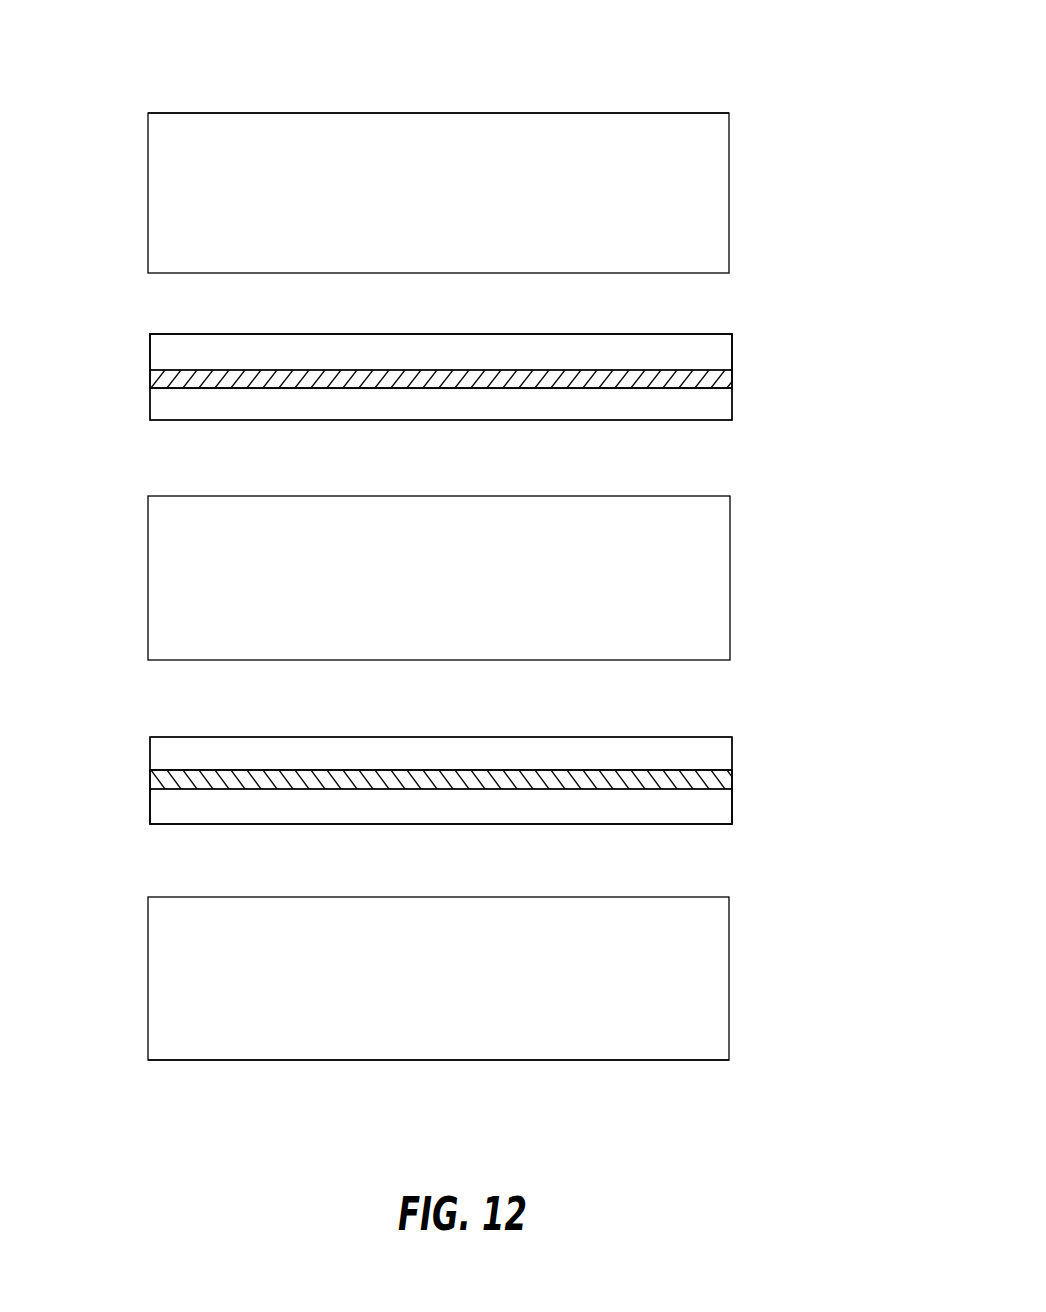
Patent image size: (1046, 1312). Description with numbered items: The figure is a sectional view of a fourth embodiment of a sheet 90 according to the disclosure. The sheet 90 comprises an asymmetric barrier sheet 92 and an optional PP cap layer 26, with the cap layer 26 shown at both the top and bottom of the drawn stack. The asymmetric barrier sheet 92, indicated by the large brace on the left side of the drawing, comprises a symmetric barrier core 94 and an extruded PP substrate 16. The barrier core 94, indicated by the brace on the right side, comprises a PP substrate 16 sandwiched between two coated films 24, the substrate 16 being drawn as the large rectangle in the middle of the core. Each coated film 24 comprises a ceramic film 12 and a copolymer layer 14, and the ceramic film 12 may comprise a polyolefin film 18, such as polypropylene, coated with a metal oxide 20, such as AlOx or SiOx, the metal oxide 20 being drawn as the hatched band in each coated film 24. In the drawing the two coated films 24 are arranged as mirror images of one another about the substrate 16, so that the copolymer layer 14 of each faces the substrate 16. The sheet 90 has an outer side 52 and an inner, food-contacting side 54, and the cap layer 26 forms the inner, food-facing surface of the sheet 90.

The sheet 90 is at (712, 66).
The inner side 54 is at (440, 113).
The PP cap layer 26 is at (731, 193).
The polyolefin film 18 is at (732, 351).
The metal oxide 20 is at (732, 378).
The copolymer layer 14 is at (732, 403).
The ceramic film 12 is at (782, 334).
The coated film 24 is at (148, 334).
The PP substrate 16 is at (716, 581).
The asymmetric barrier sheet 92 is at (105, 334).
The symmetric barrier core 94 is at (827, 334).
The outer side 52 is at (440, 1060).